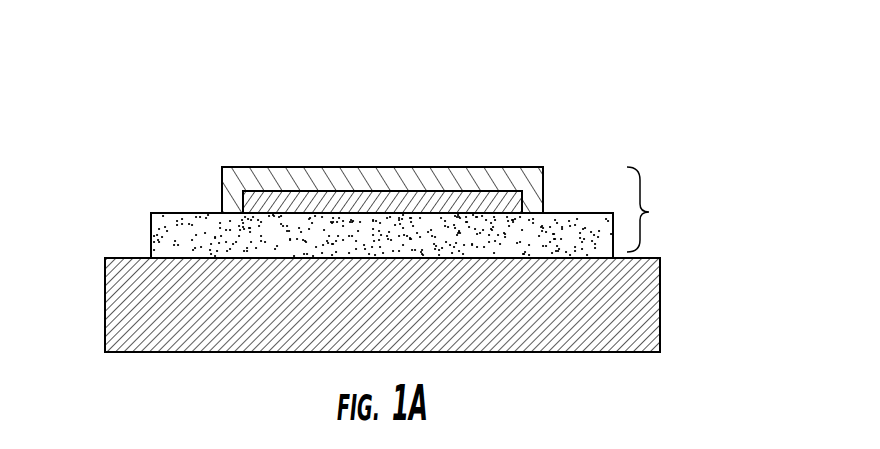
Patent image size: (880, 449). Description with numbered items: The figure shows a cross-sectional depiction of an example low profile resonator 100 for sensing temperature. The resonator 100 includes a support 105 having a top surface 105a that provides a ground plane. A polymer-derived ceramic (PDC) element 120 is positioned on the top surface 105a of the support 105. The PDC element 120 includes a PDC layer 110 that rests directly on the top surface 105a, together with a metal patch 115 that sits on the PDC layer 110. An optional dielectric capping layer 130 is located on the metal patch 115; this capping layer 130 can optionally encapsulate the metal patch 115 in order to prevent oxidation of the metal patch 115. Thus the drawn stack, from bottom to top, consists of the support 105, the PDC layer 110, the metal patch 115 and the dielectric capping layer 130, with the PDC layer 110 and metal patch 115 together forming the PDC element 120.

The low profile resonator 100 is at (622, 120).
The support 105 is at (105, 308).
The top surface 105a is at (105, 256).
The PDC layer 110 is at (180, 230).
The metal patch 115 is at (396, 200).
The polymer-derived ceramic (PDC) element 120 is at (649, 212).
The dielectric capping layer 130 is at (290, 172).